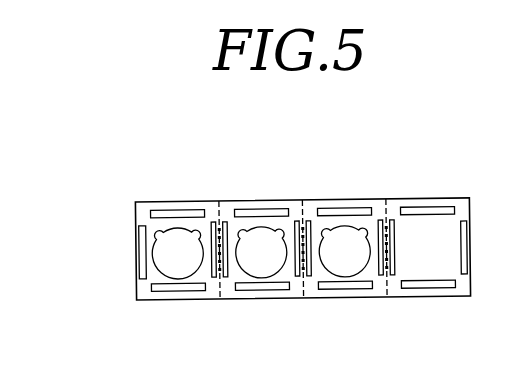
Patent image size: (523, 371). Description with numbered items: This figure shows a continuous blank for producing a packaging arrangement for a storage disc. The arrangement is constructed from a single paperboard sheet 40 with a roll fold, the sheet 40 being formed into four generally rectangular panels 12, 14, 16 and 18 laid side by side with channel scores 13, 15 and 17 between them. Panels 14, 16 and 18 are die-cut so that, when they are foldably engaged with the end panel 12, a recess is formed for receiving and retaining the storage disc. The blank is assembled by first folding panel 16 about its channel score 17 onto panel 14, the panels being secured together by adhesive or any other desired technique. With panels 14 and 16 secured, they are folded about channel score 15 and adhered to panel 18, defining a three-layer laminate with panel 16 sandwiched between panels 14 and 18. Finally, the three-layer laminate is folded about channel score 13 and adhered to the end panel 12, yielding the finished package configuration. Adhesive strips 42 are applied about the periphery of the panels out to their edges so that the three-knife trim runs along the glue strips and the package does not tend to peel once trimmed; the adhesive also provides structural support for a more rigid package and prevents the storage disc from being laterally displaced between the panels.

The paperboard sheet 40 is at (96, 266).
The end panel 12 is at (424, 300).
The rectangular panel 14 is at (272, 300).
The rectangular panel 16 is at (195, 300).
The rectangular panel 18 is at (346, 300).
The channel score 13 is at (386, 202).
The channel score 15 is at (303, 202).
The channel score 17 is at (220, 202).
The adhesive strips 42 is at (448, 210).